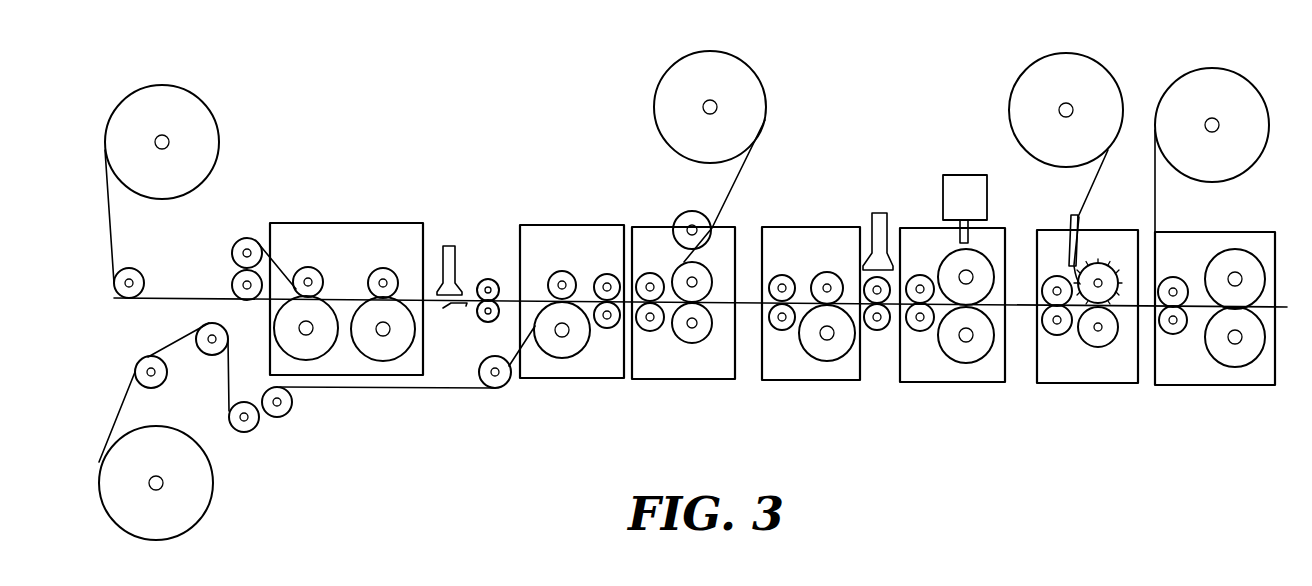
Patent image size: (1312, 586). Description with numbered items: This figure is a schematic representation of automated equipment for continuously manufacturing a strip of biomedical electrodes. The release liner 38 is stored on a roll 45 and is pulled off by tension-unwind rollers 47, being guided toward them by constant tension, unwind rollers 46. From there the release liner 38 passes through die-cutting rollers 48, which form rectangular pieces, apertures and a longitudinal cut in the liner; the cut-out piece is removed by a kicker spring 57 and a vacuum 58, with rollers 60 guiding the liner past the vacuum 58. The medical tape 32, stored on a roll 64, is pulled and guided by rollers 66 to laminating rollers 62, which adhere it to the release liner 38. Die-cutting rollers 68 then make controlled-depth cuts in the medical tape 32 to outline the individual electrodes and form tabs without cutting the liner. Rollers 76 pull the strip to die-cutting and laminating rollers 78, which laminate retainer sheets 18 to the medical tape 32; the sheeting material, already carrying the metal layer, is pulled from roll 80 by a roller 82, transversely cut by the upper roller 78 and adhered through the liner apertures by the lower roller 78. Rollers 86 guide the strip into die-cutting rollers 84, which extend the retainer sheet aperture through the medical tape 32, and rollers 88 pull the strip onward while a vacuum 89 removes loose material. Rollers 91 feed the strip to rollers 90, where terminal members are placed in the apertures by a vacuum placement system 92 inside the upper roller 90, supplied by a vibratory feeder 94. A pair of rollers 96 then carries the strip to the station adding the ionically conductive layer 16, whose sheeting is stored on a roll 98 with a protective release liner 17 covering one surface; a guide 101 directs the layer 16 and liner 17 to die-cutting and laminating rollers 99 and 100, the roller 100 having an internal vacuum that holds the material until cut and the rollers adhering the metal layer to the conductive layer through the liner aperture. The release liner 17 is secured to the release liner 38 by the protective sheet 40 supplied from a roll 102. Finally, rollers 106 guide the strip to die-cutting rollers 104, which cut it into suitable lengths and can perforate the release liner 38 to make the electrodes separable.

The ionically conductive layer 16 is at (1090, 180).
The release liner 17 is at (1102, 168).
The retainer sheet 18 is at (745, 173).
The medical tape 32 is at (357, 388).
The release liner 38 is at (112, 232).
The protective sheet 40 is at (1162, 202).
The roll 45 is at (193, 105).
The constant tension, unwind rollers 46 is at (233, 253).
The tension-unwind rollers 47 is at (323, 300).
The die-cutting rollers 48 is at (360, 300).
The kicker spring 57 is at (457, 307).
The vacuum 58 is at (458, 243).
The rollers 60 is at (499, 307).
The laminating rollers 62 is at (543, 303).
The roll 64 is at (202, 505).
The rollers 66 is at (164, 376).
The die-cutting rollers 68 is at (596, 305).
The rollers 76 is at (662, 300).
The die-cutting and laminating rollers 78 is at (706, 292).
The roll 80 is at (740, 73).
The roller 82 is at (685, 213).
The die-cutting rollers 84 is at (838, 308).
The rollers 86 is at (790, 313).
The rollers 88 is at (890, 320).
The vacuum 89 is at (879, 212).
The rollers 90 is at (983, 288).
The rollers 91 is at (930, 318).
The vacuum placement system 92 is at (953, 257).
The vibratory feeder 94 is at (957, 176).
The pair of rollers 96 is at (1050, 297).
The roll 98 is at (1060, 55).
The die-cutting and laminating roller 99 is at (1113, 345).
The die-cutting and laminating roller 100 is at (1106, 264).
The guide 101 is at (1071, 220).
The roll 102 is at (1202, 72).
The die-cutting rollers 104 is at (1253, 322).
The rollers 106 is at (1183, 308).